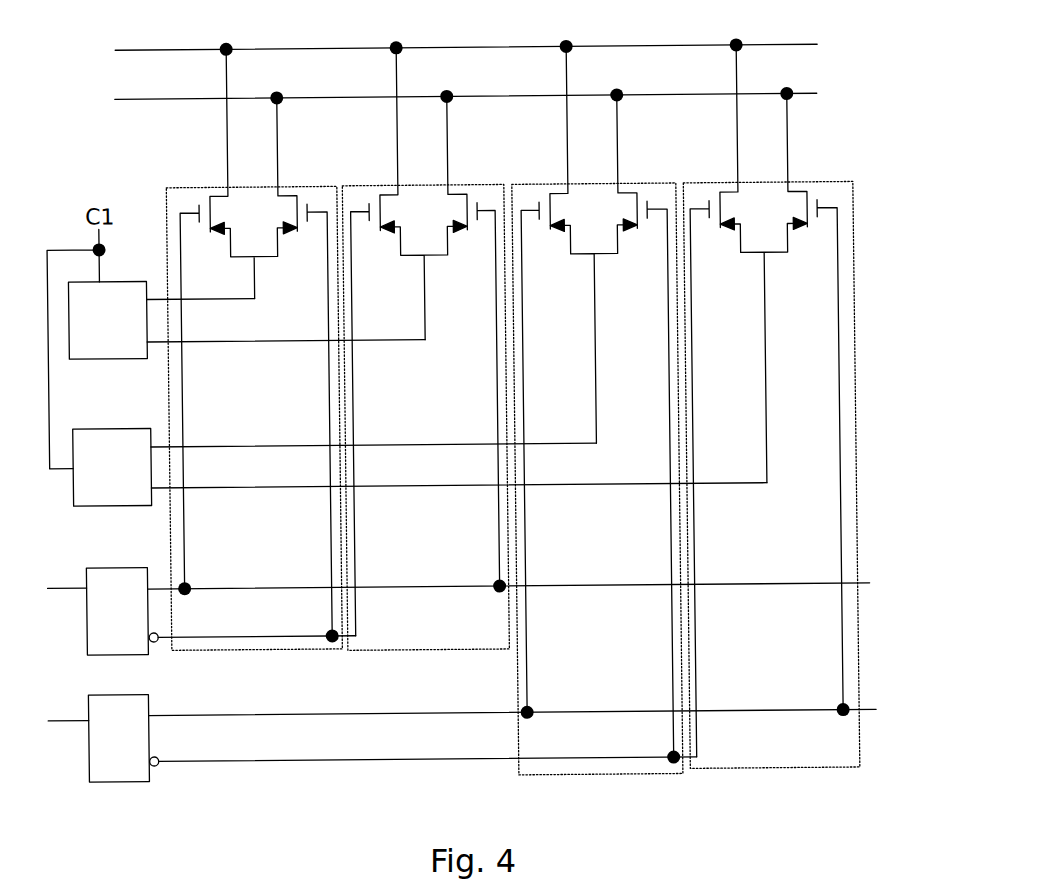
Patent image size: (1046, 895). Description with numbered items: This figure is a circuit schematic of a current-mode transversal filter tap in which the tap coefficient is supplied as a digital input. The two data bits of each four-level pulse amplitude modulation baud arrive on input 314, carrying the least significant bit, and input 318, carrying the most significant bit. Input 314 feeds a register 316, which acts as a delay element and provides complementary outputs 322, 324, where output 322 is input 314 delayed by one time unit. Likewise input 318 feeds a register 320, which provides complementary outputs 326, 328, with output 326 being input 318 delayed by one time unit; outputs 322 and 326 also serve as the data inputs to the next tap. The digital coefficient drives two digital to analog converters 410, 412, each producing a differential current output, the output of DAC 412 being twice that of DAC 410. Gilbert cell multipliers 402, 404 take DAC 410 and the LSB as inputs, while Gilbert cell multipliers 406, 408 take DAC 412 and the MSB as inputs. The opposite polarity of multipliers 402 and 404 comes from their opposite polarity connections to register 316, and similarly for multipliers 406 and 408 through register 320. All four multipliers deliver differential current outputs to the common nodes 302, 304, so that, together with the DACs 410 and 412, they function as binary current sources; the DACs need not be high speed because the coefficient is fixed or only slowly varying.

The node 302 is at (153, 47).
The node 304 is at (154, 96).
The Gilbert cell multiplier 402 is at (316, 185).
The Gilbert cell multiplier 404 is at (490, 184).
The Gilbert cell multiplier 406 is at (660, 184).
The Gilbert cell multiplier 408 is at (829, 185).
The digital to analog converter 410 is at (138, 278).
The digital to analog converter 412 is at (141, 426).
The input 314 is at (58, 584).
The register 316 is at (144, 550).
The input 318 is at (69, 717).
The register 320 is at (136, 778).
The output 322 is at (256, 586).
The output 324 is at (220, 634).
The output 326 is at (313, 712).
The output 328 is at (257, 758).